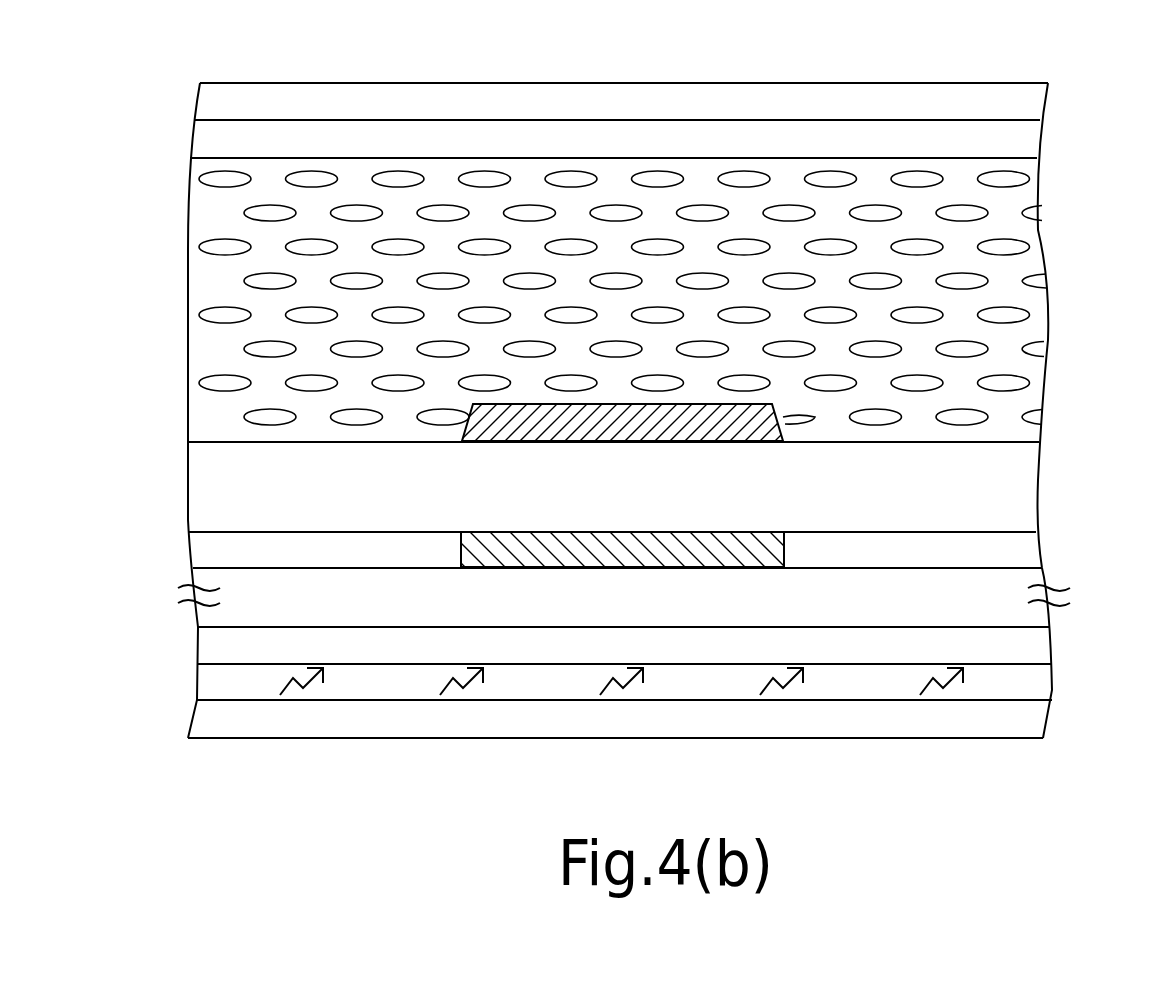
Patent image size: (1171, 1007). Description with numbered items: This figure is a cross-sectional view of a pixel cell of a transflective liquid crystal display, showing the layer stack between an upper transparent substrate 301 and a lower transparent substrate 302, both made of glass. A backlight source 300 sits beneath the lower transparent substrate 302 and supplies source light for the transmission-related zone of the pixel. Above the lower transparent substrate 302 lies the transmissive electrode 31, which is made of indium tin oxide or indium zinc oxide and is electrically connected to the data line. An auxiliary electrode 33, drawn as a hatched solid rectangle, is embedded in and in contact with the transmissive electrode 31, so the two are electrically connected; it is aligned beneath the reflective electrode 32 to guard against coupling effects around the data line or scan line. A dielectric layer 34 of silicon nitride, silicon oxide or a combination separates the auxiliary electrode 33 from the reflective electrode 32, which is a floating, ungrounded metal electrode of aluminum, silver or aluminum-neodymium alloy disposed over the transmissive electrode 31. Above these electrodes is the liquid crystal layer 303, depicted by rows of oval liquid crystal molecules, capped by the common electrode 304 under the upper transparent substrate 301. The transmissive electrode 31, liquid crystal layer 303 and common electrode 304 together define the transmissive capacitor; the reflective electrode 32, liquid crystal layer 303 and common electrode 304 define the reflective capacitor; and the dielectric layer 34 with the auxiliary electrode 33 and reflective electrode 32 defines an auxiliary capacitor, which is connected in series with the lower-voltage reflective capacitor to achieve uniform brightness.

The backlight source 300 is at (1023, 722).
The lower transparent substrate 302 is at (1042, 652).
The transmissive electrode 31 is at (1017, 550).
The dielectric layer 34 is at (1023, 488).
The reflective electrode 32 is at (687, 432).
The auxiliary electrode 33 is at (757, 550).
The liquid crystal layer 303 is at (1030, 270).
The common electrode 304 is at (950, 148).
The upper transparent substrate 301 is at (833, 95).